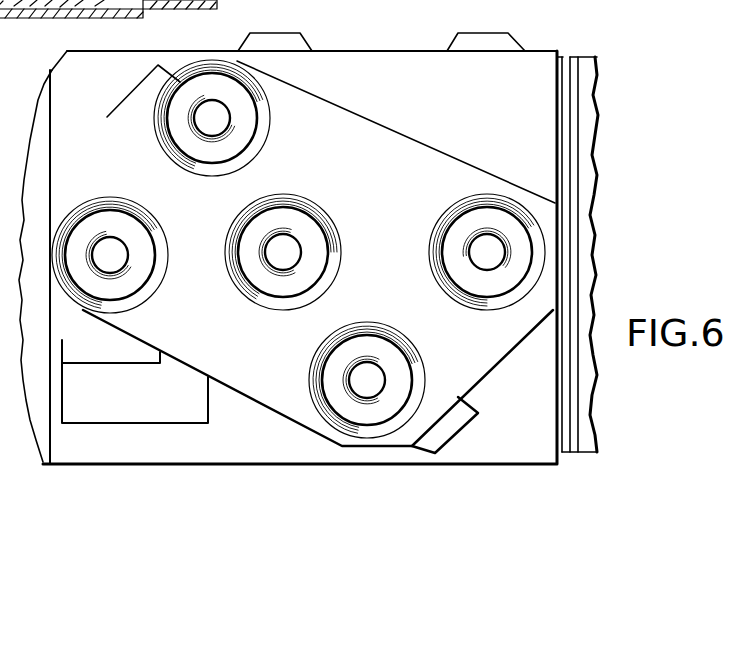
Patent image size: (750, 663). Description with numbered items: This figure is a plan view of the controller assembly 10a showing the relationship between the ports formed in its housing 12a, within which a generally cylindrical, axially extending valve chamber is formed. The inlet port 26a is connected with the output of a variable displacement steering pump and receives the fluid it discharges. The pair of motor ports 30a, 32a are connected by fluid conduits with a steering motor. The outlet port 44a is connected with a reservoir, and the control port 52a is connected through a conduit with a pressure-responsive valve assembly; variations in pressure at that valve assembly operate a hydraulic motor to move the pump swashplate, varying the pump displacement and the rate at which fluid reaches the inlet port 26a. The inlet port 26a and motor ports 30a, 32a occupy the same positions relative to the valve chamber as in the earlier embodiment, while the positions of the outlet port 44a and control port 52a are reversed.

The controller assembly 10a is at (604, 96).
The housing 12a is at (466, 116).
The inlet port 26a is at (143, 280).
The motor port 30a is at (241, 128).
The motor port 32a is at (366, 343).
The outlet port 44a is at (350, 198).
The control port 52a is at (437, 250).